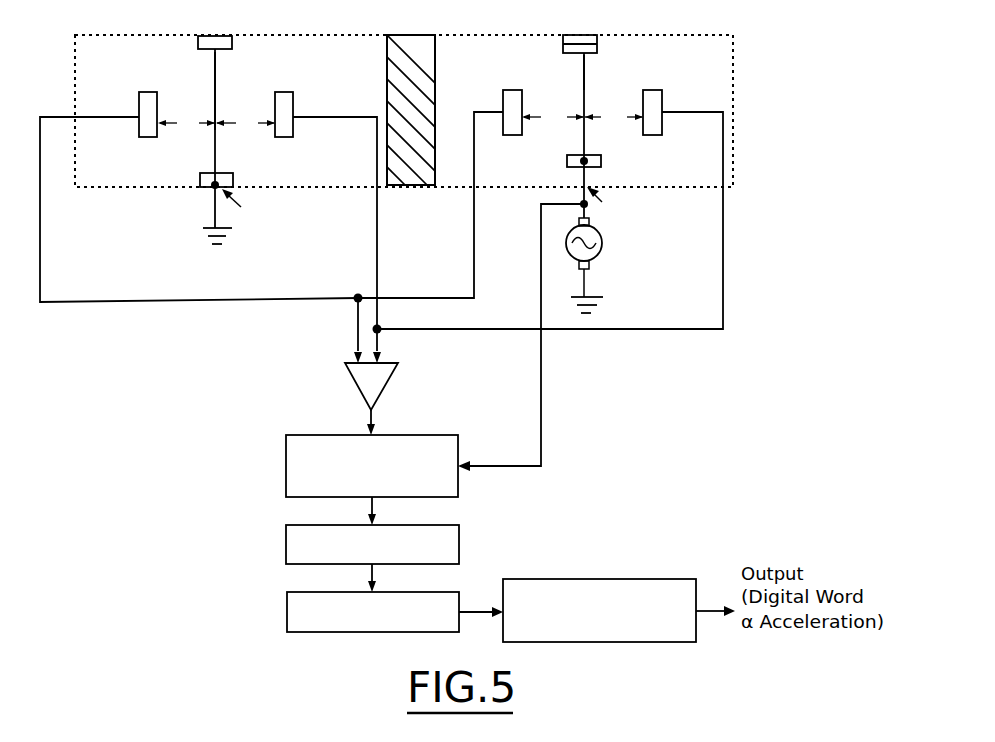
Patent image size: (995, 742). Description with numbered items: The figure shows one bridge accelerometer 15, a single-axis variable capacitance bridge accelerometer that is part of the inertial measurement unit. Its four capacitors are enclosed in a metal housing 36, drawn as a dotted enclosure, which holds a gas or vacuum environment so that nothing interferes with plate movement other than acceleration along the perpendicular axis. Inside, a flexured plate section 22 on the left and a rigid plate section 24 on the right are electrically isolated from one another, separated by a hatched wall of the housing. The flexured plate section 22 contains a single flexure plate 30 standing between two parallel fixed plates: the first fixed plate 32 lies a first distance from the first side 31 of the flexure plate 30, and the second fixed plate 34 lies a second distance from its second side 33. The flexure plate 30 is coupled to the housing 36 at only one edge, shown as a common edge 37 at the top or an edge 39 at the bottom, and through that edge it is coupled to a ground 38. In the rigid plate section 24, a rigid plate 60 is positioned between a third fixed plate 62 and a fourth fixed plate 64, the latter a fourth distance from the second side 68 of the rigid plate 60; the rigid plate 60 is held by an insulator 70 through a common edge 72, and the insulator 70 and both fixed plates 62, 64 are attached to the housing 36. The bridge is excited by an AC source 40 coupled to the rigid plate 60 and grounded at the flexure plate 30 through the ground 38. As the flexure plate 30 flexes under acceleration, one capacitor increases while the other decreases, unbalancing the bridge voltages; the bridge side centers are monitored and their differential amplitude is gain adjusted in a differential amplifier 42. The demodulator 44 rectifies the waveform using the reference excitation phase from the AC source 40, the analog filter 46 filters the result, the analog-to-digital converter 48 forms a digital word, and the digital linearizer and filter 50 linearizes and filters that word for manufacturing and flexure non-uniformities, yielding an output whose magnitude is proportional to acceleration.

The bridge accelerometer 15 is at (782, 160).
The flexured plate section 22 is at (108, 35).
The rigid plate section 24 is at (532, 33).
The flexure plate 30 is at (215, 145).
The first side 31 is at (215, 58).
The first fixed plate 32 is at (149, 91).
The second side 33 is at (227, 85).
The second fixed plate 34 is at (283, 91).
The housing 36 is at (303, 34).
The common edge 37 is at (217, 35).
The ground 38 is at (203, 227).
The edge 39 is at (232, 172).
The AC source 40 is at (603, 240).
The differential amplifier 42 is at (391, 384).
The demodulator 44 is at (286, 457).
The analog filter 46 is at (286, 534).
The analog-to-digital converter 48 is at (287, 604).
The digital linearizer and filter 50 is at (620, 578).
The rigid plate 60 is at (587, 72).
The third fixed plate 62 is at (513, 89).
The fourth fixed plate 64 is at (652, 89).
The second side 68 is at (587, 92).
The insulator 70 is at (590, 34).
The common edge 72 is at (578, 58).